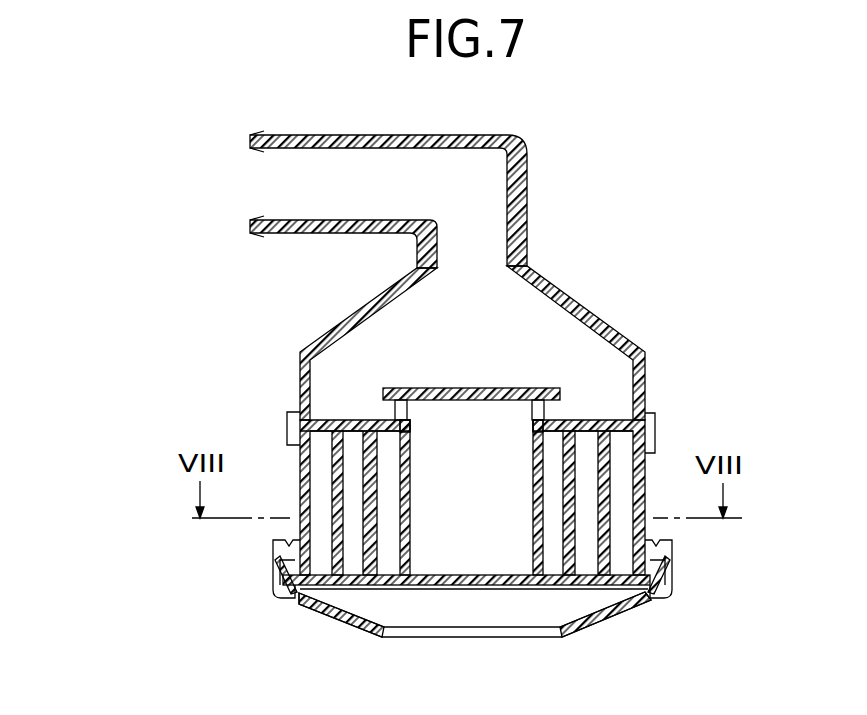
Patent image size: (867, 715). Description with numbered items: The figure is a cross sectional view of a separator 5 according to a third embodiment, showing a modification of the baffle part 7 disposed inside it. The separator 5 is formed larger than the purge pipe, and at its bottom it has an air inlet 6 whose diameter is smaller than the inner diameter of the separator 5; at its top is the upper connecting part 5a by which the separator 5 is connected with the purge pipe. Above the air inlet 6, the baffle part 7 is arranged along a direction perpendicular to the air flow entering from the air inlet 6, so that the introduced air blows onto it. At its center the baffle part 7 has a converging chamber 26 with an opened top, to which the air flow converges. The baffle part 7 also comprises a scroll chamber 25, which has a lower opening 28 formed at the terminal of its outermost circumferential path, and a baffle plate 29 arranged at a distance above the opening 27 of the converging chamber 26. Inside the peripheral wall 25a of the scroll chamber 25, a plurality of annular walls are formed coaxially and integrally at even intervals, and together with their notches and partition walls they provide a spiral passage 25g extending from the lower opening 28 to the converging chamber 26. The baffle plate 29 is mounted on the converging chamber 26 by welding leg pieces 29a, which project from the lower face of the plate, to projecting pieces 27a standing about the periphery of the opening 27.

The upper connecting part 5a is at (360, 134).
The separator 5 is at (560, 275).
The baffle part 7 is at (465, 358).
The peripheral wall 25a is at (645, 477).
The spiral passage 25g is at (392, 510).
The opening 27 is at (510, 408).
The projecting pieces 27a is at (537, 410).
The converging chamber 26 is at (490, 520).
The baffle plate 29 is at (437, 387).
The leg pieces 29a is at (393, 410).
The scroll chamber 25 is at (427, 590).
The lower opening 28 is at (619, 590).
The air inlet 6 is at (521, 637).